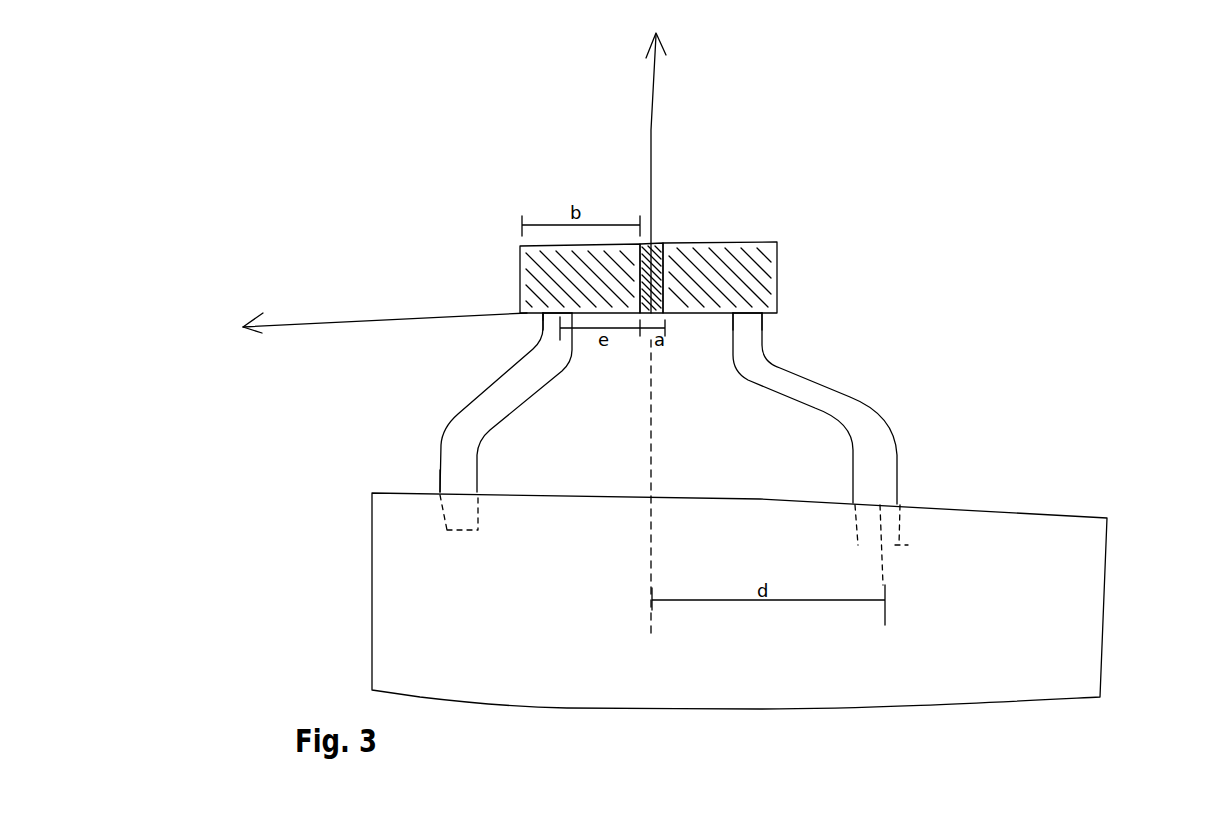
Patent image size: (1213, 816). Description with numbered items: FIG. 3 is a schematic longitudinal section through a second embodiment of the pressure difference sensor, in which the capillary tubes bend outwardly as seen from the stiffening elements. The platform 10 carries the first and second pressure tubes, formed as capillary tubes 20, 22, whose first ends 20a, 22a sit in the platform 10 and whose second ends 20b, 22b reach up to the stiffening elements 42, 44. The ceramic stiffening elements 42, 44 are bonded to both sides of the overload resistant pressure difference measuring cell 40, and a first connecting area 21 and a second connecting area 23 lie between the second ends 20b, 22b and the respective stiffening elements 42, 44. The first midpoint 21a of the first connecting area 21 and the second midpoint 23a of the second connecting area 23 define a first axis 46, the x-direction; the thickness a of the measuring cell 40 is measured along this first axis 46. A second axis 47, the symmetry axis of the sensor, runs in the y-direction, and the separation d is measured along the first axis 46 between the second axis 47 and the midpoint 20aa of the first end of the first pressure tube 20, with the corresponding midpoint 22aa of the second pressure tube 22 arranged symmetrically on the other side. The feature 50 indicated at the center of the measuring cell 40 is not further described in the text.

The platform 10 is at (1108, 605).
The first pressure tube 20 is at (478, 405).
The foot end of first leg 20a is at (432, 480).
The midpoint of the first end of the first pressure tube 20aa is at (440, 458).
The second end of the first capillary tube 20b is at (835, 324).
The first connecting area 21 is at (770, 322).
The first midpoint 21a is at (750, 323).
The second pressure tube 22 is at (848, 405).
The foot end of second leg 22a is at (908, 493).
The midpoint of the first end of the second pressure tube 22aa is at (888, 494).
The second end of the second capillary tube 22b is at (530, 322).
The second connecting area 23 is at (487, 334).
The second midpoint 23a is at (550, 323).
The pressure difference measuring cell 40 is at (660, 243).
The first stiffening element 42 is at (530, 282).
The second stiffening element 44 is at (730, 260).
The first axis 46 is at (285, 322).
The second axis 47 is at (655, 90).
The central section of cross member 50 is at (668, 268).